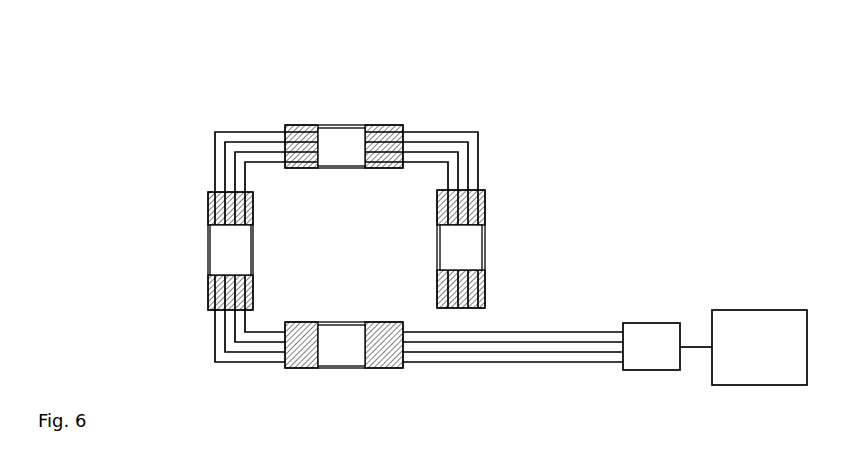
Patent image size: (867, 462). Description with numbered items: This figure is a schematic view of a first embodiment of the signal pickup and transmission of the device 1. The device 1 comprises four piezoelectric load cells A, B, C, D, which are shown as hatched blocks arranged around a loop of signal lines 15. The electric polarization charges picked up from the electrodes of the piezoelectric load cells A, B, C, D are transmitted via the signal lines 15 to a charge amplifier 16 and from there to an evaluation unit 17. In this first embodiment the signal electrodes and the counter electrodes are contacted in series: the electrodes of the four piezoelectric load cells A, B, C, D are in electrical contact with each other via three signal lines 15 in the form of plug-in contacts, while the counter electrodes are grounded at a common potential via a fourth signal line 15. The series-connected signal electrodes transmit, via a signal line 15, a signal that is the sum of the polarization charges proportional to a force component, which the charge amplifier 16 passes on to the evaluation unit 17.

The device 1 is at (134, 119).
The first piezoelectric load cell A is at (210, 202).
The second piezoelectric load cell B is at (463, 287).
The third piezoelectric load cell C is at (380, 150).
The fourth piezoelectric load cell D is at (288, 333).
The signal lines 15 is at (579, 313).
The charge amplifier 16 is at (661, 356).
The evaluation unit 17 is at (767, 356).